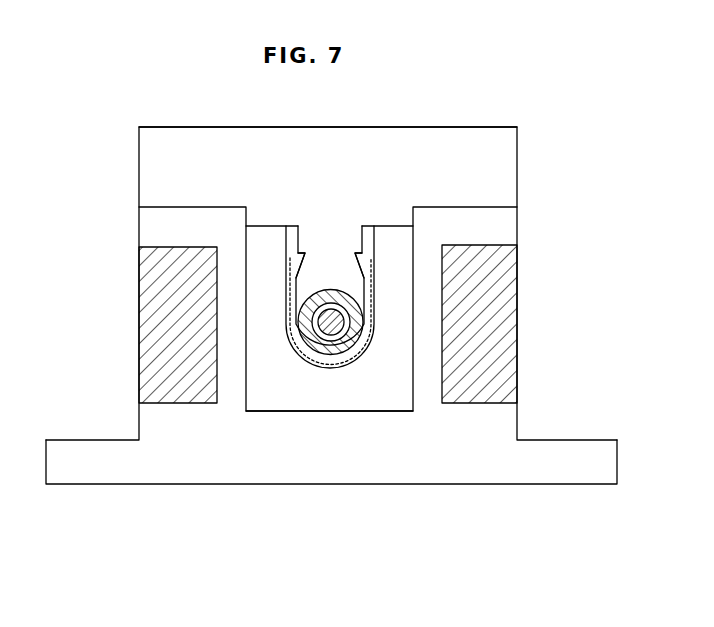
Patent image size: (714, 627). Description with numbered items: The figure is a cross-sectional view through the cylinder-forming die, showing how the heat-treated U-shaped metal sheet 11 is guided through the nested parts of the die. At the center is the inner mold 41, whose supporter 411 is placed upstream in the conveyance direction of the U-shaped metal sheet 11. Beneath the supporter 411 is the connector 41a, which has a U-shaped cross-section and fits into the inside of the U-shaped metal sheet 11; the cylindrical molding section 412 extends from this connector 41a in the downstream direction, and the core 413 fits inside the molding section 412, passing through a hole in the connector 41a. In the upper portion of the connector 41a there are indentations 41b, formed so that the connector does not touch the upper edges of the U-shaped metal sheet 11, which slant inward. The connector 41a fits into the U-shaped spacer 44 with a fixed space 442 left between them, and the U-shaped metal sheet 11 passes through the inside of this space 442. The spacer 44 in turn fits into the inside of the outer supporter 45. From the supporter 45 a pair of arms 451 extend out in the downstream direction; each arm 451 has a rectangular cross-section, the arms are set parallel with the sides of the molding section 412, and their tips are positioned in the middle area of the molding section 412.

The inner mold 41 is at (518, 127).
The supporter 411 is at (508, 175).
The connector 41a is at (353, 279).
The indentations 41b is at (285, 254).
The arms 451 is at (150, 300).
The supporter 45 is at (428, 485).
The spacer 44 is at (368, 404).
The space 442 is at (330, 369).
The molding section 412 is at (353, 334).
The core 413 is at (331, 290).
The U-shaped metal sheet 11 is at (286, 300).